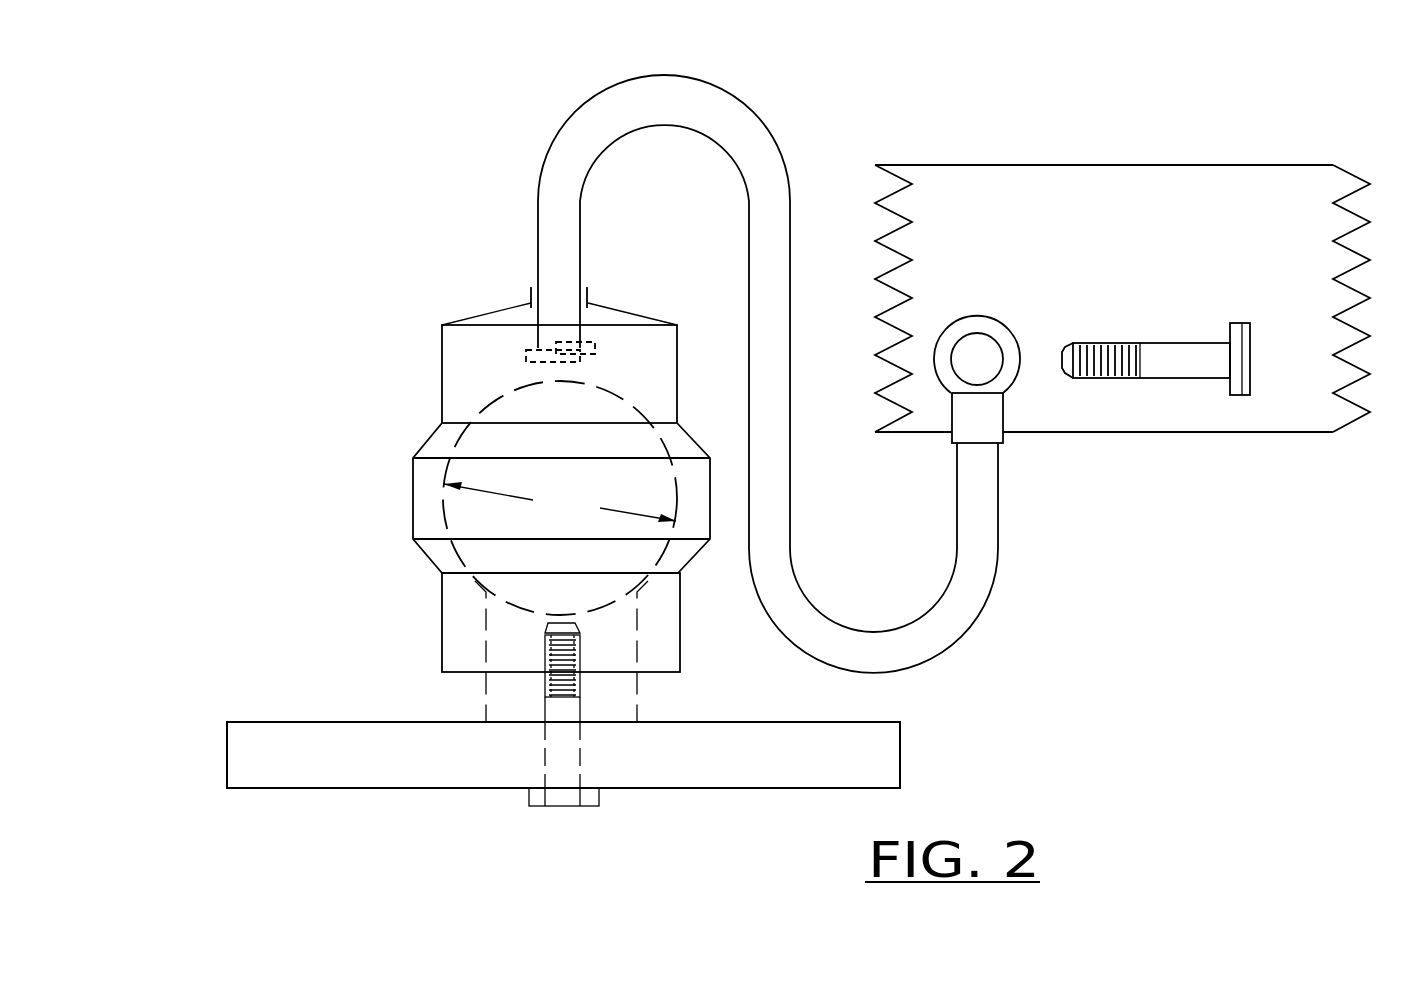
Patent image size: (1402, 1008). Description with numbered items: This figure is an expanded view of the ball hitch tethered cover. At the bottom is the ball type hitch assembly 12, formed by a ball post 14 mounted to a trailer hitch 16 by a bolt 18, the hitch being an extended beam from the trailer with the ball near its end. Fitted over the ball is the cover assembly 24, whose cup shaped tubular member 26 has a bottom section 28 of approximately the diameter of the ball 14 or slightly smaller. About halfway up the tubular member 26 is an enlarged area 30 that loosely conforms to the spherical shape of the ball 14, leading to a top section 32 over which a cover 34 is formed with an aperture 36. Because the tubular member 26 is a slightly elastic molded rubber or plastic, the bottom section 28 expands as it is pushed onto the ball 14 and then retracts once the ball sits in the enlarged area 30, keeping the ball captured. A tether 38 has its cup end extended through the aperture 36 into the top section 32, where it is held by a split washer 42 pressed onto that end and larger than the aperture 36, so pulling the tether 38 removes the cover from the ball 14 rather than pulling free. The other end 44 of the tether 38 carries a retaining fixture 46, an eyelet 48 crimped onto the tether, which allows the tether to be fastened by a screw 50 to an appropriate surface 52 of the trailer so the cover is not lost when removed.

The ball type hitch assembly 12 is at (546, 746).
The ball post 14 is at (651, 706).
The trailer hitch 16 is at (392, 767).
The bolt 18 is at (611, 767).
The assembly 24 is at (753, 346).
The cup shaped tubular member 26 is at (427, 378).
The bottom section 28 is at (487, 622).
The enlarged area 30 is at (410, 498).
The top section 32 is at (477, 363).
The cover 34 is at (649, 257).
The aperture 36 is at (453, 255).
The tether 38 is at (768, 346).
The split washer 42 is at (504, 400).
The other end 44 is at (1049, 488).
The retaining fixture 46 is at (1014, 243).
The eyelet 48 is at (1053, 249).
The screw 50 is at (1229, 250).
The surface 52 is at (1168, 254).